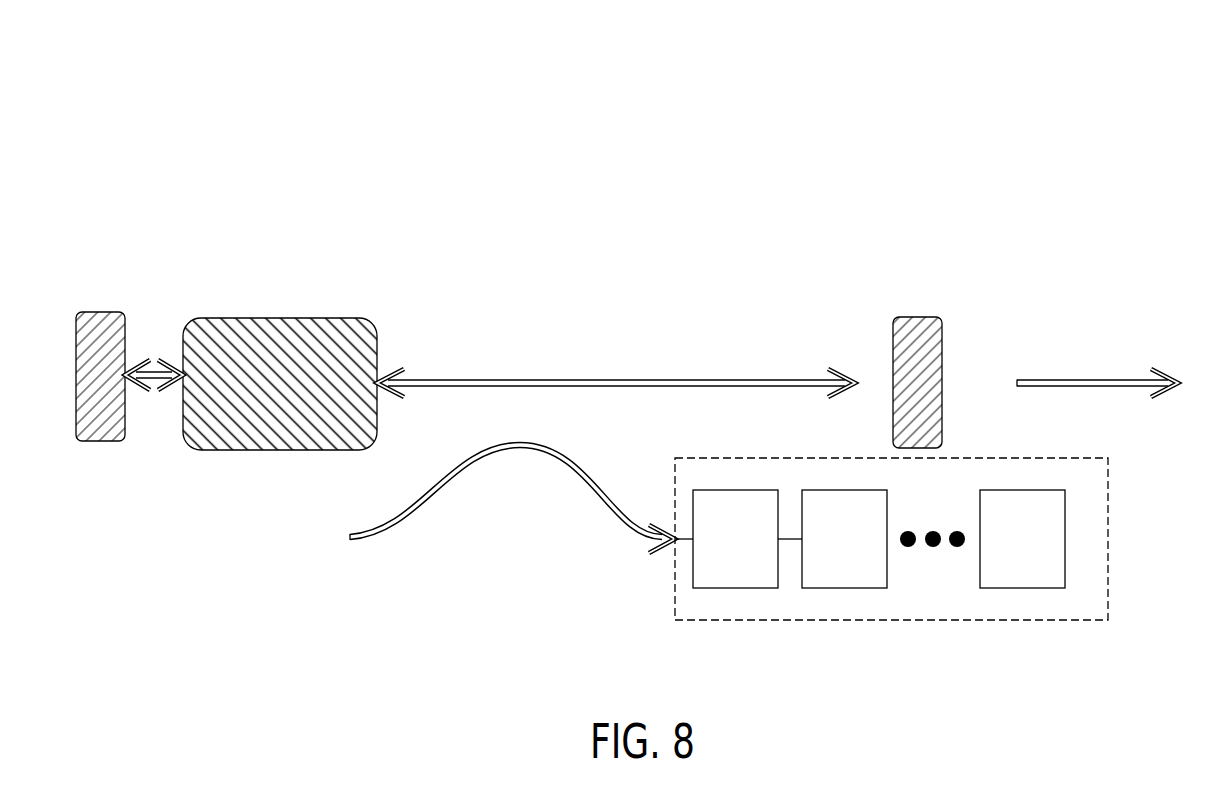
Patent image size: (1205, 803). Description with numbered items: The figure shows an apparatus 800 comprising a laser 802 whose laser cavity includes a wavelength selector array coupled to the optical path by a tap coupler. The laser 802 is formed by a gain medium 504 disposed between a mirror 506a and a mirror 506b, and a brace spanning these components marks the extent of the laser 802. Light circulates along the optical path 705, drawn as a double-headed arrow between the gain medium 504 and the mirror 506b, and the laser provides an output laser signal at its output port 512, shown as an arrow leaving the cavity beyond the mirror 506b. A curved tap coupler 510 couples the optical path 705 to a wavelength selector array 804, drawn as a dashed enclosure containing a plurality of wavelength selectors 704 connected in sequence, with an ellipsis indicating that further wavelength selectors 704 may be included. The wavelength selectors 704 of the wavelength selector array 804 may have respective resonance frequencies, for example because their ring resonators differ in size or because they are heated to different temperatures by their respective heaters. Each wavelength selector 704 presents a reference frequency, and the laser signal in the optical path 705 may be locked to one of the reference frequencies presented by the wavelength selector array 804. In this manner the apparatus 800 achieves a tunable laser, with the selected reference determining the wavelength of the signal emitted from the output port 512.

The apparatus 800 is at (148, 117).
The laser 802 is at (935, 190).
The mirror 506a is at (103, 325).
The gain medium 504 is at (277, 328).
The optical path 705 is at (608, 360).
The mirror 506b is at (915, 325).
The output port 512 is at (1093, 332).
The tap coupler 510 is at (460, 494).
The wavelength selector array 804 is at (1098, 620).
The wavelength selector 704 is at (725, 588).